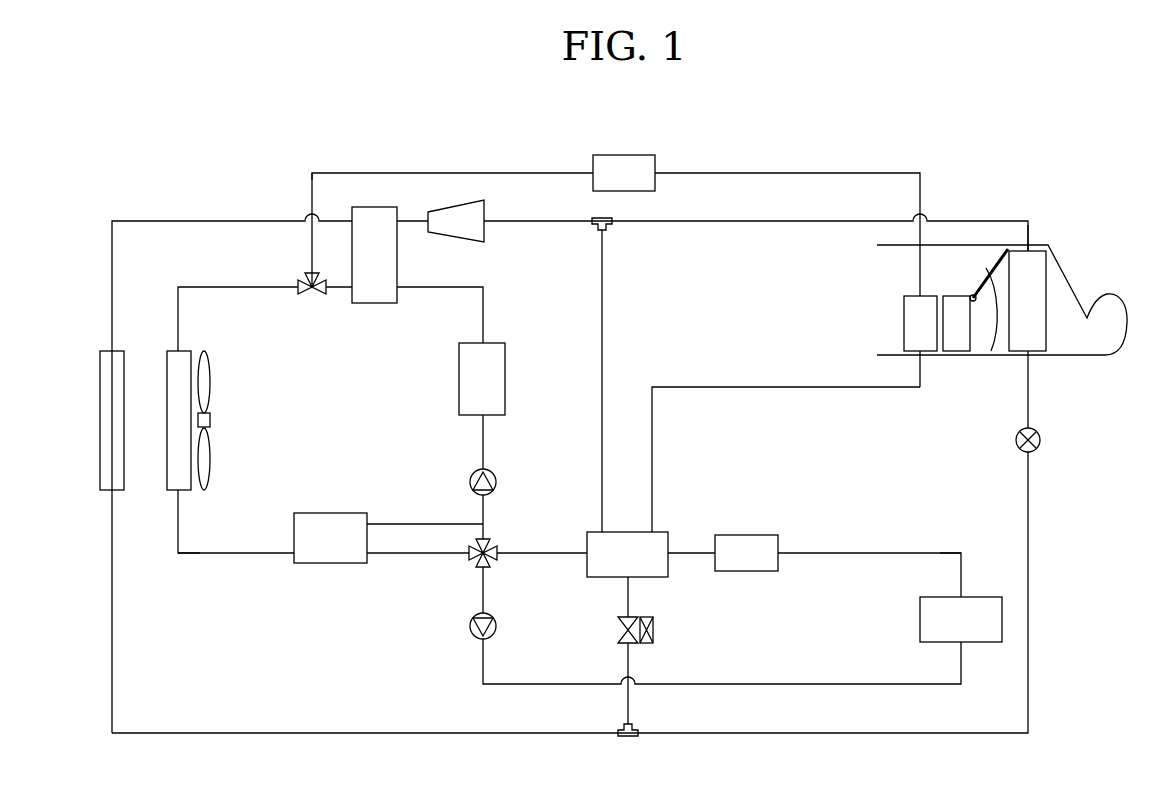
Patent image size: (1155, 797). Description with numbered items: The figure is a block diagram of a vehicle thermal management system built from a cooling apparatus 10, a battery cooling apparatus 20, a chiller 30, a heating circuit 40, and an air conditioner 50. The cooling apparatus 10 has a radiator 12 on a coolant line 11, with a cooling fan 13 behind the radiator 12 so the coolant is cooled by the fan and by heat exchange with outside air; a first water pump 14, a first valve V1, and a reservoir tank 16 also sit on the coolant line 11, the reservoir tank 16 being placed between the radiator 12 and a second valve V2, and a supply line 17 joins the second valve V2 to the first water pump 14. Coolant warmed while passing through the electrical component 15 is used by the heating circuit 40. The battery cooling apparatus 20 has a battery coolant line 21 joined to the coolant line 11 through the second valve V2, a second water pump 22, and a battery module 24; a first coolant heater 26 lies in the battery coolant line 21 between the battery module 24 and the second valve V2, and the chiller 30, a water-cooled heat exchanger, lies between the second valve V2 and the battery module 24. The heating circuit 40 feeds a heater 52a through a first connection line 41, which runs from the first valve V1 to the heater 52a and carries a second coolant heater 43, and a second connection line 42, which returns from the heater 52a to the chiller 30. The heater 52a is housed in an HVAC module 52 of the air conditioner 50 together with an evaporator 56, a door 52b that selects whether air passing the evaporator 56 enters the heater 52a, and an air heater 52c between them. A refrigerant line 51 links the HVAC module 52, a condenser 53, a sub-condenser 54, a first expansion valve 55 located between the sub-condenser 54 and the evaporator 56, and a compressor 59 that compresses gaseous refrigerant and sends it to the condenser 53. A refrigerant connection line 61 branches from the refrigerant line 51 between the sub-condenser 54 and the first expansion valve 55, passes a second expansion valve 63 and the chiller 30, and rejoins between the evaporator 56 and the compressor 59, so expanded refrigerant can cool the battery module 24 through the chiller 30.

The cooling apparatus 10 is at (189, 563).
The coolant line 11 is at (236, 287).
The radiator 12 is at (167, 419).
The cooling fan 13 is at (211, 420).
The first water pump 14 is at (497, 482).
The electrical component 15 is at (506, 378).
The reservoir tank 16 is at (330, 564).
The supply line 17 is at (425, 524).
The first valve V1 is at (312, 295).
The second valve V2 is at (475, 560).
The battery cooling apparatus 20 is at (940, 548).
The battery coolant line 21 is at (540, 553).
The second water pump 22 is at (497, 626).
The battery module 24 is at (920, 617).
The first coolant heater 26 is at (745, 535).
The chiller 30 is at (627, 532).
The heating circuit 40 is at (866, 165).
The first connection line 41 is at (787, 173).
The second connection line 42 is at (753, 387).
The second coolant heater 43 is at (623, 155).
The air conditioner 50 is at (1017, 217).
The refrigerant line 51 is at (210, 221).
The HVAC module 52 is at (1068, 266).
The heater 52a is at (904, 322).
The door 52b is at (990, 355).
The air heater 52c is at (958, 355).
The condenser 53 is at (373, 303).
The sub-condenser 54 is at (100, 419).
The first expansion valve 55 is at (1041, 440).
The evaporator 56 is at (1046, 340).
The compressor 59 is at (486, 236).
The refrigerant connection line 61 is at (632, 703).
The second expansion valve 63 is at (656, 630).